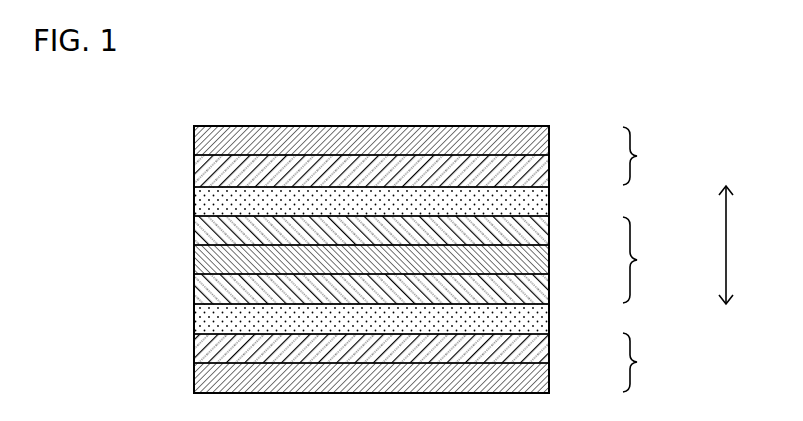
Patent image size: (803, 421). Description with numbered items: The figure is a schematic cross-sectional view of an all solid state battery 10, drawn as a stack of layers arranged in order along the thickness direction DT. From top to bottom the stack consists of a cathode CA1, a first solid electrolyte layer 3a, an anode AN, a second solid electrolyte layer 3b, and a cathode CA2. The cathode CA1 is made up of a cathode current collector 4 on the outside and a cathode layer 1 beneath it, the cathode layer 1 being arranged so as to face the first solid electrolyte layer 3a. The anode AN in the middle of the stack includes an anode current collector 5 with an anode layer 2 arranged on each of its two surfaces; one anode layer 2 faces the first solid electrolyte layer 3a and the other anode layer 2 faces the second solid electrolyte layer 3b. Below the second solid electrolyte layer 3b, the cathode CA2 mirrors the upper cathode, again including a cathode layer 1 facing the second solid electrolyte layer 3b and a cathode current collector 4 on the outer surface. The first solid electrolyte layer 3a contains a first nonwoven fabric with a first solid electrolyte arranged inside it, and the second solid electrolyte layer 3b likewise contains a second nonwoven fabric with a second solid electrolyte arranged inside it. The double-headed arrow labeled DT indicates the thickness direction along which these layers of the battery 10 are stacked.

The all solid state battery 10 is at (520, 98).
The cathode current collector 4 is at (535, 142).
The cathode layer 1 is at (535, 171).
The first solid electrolyte layer 3a is at (535, 201).
The anode layer 2 is at (535, 231).
The anode current collector 5 is at (535, 259).
The second solid electrolyte layer 3b is at (535, 319).
The cathode CA1 is at (657, 156).
The anode AN is at (656, 260).
The cathode CA2 is at (657, 362).
The thickness direction DT is at (739, 245).